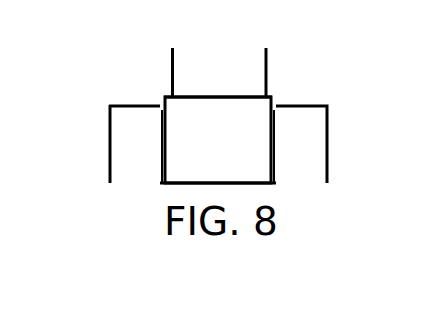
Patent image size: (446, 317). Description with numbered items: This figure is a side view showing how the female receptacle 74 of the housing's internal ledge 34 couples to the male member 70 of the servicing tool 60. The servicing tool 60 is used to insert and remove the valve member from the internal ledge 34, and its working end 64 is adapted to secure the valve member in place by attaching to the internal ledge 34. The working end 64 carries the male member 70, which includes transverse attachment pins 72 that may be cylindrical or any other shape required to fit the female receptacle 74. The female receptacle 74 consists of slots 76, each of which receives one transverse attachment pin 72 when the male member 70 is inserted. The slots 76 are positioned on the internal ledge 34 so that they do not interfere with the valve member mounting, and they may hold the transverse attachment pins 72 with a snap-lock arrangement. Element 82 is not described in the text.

The internal ledge 34 is at (139, 107).
The servicing tool 60 is at (248, 66).
The working end 64 is at (223, 87).
The male member 70 is at (272, 137).
The transverse attachment pin 72 is at (235, 148).
The female receptacle 74 is at (109, 142).
The slot 76 is at (273, 166).
The base plate 82 is at (168, 185).